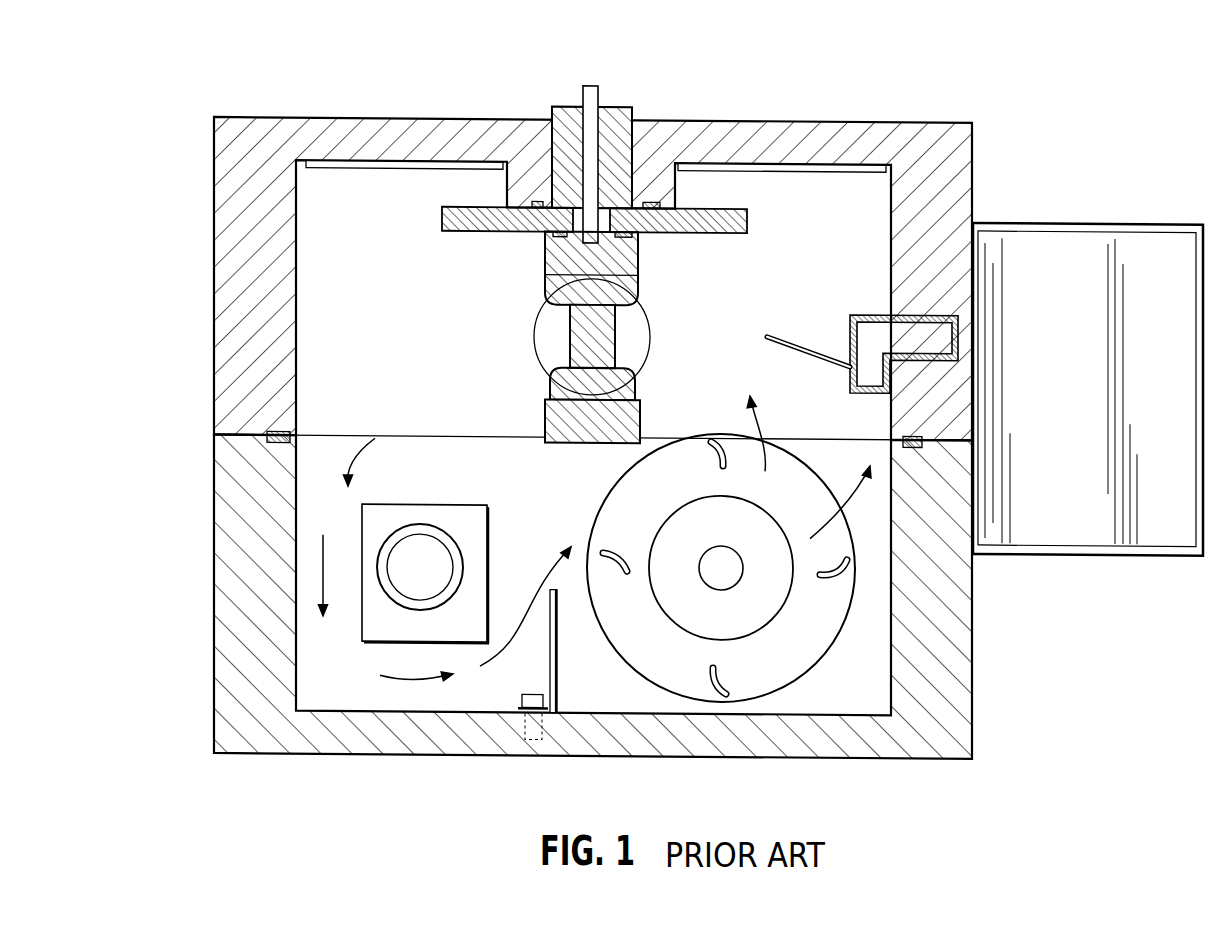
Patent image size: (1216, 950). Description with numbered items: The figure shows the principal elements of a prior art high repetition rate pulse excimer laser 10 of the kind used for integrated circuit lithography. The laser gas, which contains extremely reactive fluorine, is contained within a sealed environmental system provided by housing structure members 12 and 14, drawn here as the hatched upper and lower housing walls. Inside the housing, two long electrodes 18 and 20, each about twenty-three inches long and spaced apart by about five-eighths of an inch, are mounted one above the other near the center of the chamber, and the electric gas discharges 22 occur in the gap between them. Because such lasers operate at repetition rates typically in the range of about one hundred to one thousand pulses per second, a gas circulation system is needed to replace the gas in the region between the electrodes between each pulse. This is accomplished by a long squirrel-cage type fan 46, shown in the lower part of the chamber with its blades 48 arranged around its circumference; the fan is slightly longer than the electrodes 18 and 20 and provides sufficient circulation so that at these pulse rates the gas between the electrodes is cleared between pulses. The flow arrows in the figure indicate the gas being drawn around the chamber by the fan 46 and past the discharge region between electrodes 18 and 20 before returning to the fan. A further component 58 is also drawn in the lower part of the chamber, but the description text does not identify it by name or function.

The laser 10 is at (708, 424).
The housing structure member 12 is at (294, 125).
The housing structure member 14 is at (325, 757).
The electrode 18 is at (623, 290).
The electrode 20 is at (626, 385).
The discharges 22 is at (570, 347).
The squirrel-cage type fan 46 is at (817, 645).
The blades 48 is at (722, 680).
The motor 58 is at (440, 506).